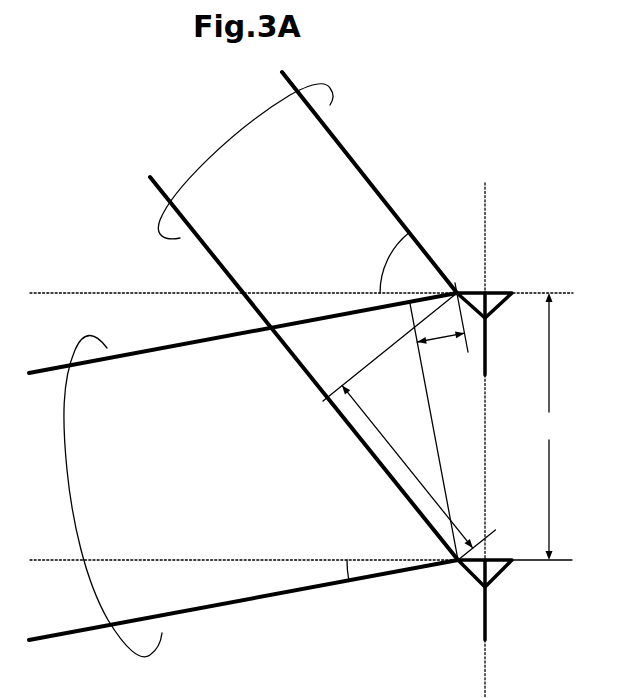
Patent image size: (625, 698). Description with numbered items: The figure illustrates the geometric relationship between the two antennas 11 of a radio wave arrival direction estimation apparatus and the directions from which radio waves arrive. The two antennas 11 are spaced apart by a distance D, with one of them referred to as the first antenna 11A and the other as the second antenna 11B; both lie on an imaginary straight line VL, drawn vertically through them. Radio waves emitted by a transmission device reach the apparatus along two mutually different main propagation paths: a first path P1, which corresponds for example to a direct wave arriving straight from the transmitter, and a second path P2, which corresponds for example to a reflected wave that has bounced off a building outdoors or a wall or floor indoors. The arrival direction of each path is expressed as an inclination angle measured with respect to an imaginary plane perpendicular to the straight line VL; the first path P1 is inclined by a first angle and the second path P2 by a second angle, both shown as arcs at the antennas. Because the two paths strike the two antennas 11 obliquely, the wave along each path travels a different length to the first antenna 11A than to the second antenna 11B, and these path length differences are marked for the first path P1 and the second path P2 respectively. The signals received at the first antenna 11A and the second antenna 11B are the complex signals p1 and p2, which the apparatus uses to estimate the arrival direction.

The antennas 11 is at (517, 463).
The first antenna 11A is at (488, 293).
The second antenna 11B is at (498, 575).
The imaginary straight line VL is at (485, 213).
The first path P1 is at (243, 475).
The second path P2 is at (304, 316).
The complex signal p1 is at (500, 426).
The complex signal p2 is at (500, 629).
The distance D is at (550, 426).